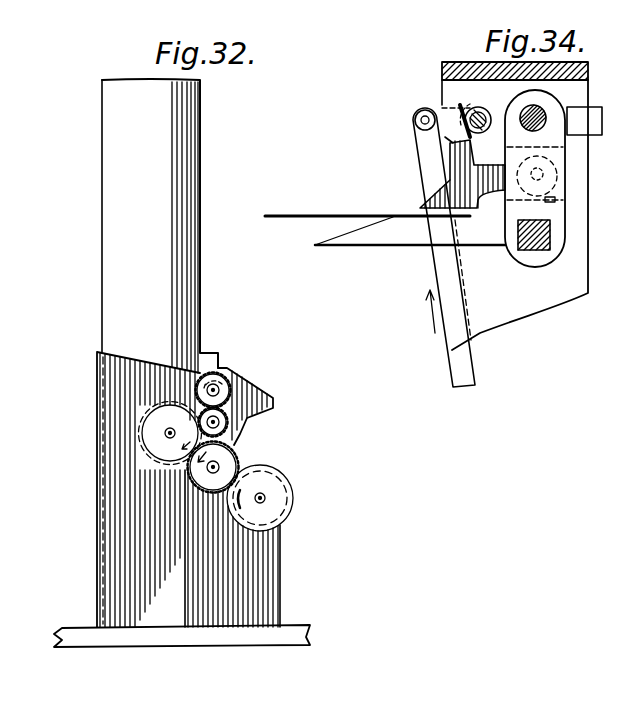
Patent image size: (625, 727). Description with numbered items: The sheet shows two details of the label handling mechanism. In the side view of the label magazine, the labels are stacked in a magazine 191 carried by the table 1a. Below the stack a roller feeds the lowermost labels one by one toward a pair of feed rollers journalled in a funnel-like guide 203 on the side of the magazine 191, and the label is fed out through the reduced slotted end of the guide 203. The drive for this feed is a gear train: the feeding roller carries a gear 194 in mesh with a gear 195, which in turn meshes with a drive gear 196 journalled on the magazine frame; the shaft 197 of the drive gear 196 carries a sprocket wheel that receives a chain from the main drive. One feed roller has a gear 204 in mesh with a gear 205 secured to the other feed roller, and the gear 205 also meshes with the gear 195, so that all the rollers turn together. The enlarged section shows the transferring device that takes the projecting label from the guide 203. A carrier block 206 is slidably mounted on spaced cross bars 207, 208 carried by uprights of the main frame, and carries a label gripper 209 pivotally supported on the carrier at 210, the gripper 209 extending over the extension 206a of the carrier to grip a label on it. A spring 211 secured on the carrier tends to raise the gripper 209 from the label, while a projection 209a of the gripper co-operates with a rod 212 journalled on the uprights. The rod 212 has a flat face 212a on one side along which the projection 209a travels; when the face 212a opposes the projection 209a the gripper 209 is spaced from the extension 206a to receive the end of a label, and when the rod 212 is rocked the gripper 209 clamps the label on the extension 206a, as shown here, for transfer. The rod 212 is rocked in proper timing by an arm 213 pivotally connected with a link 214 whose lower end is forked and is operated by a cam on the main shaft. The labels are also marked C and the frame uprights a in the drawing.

In FIG. 32, the magazine 191 is at (188, 353).
In FIG. 32, the table 1a is at (286, 627).
In FIG. 32, the funnel-like guide 203 is at (266, 366).
In FIG. 32, the gear 204 is at (222, 366).
In FIG. 32, the gear 205 is at (226, 420).
In FIG. 32, the gear 194 is at (170, 448).
In FIG. 32, the gear 195 is at (205, 478).
In FIG. 32, the drive gear 196 is at (280, 507).
In FIG. 32, the shaft 197 is at (262, 496).
In FIG. 34, the carrier block 206 is at (560, 238).
In FIG. 34, the extension 206a is at (400, 237).
In FIG. 34, the cross bar 207 is at (543, 116).
In FIG. 34, the cross bar 208 is at (540, 250).
In FIG. 34, the label gripper 209 is at (430, 205).
In FIG. 34, the projection 209a is at (455, 135).
In FIG. 34, the pivot 210 is at (537, 173).
In FIG. 34, the spring 211 is at (503, 197).
In FIG. 34, the rod 212 is at (496, 100).
In FIG. 34, the flat face 212a is at (466, 108).
In FIG. 34, the arm 213 is at (418, 112).
In FIG. 34, the link 214 is at (466, 389).
In FIG. 34, the top bar b is at (460, 72).
In FIG. 34, the guide plate c is at (363, 214).